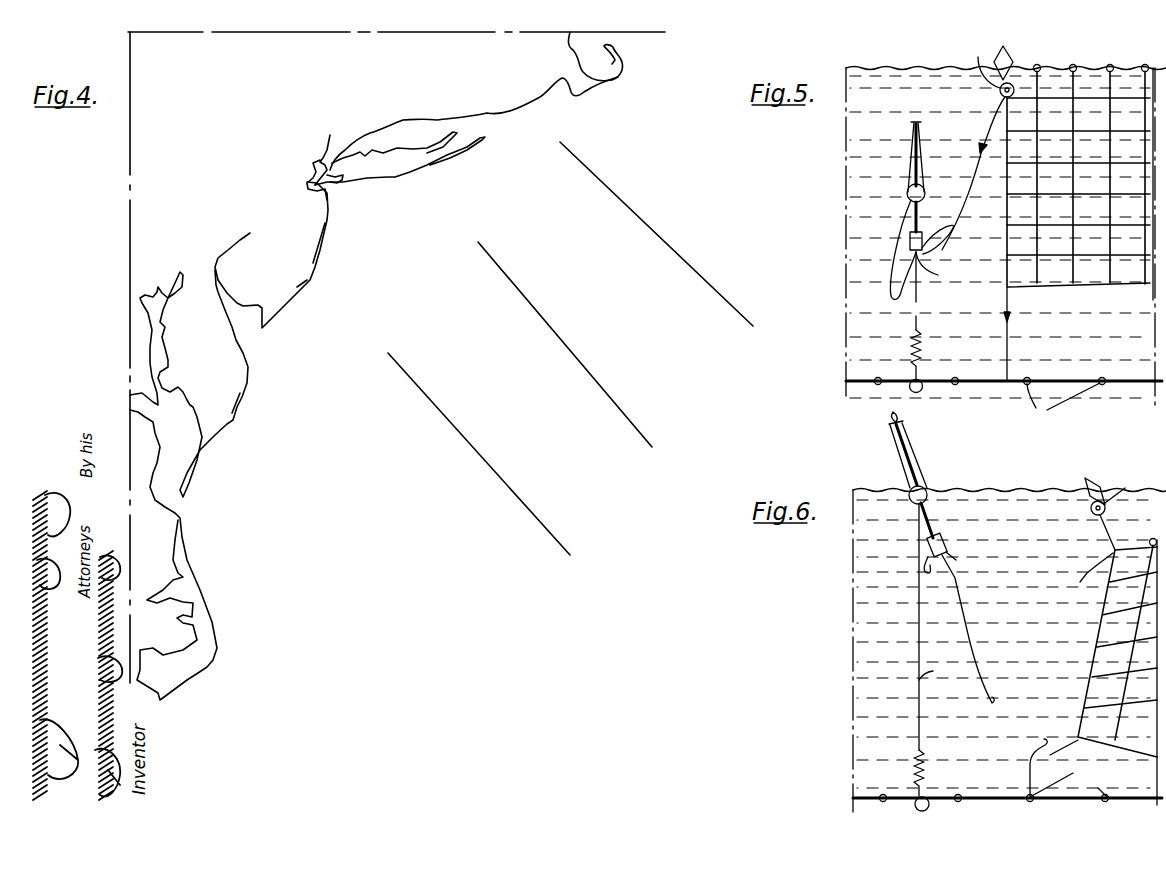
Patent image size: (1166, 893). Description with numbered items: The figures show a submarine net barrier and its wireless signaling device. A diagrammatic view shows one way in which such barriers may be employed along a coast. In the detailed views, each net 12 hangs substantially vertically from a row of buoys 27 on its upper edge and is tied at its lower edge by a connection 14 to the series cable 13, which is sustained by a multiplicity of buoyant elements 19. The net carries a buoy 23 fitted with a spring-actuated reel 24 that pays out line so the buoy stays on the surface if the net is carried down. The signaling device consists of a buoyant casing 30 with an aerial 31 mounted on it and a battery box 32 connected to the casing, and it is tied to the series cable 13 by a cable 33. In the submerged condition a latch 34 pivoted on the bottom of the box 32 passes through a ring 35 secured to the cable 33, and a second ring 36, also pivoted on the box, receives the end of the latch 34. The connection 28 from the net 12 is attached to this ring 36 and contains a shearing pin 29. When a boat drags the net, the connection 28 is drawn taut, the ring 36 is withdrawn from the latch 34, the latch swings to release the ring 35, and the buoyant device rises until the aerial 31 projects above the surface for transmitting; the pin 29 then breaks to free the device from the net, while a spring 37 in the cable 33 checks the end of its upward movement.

In FIG. 5, the net 12 is at (1005, 244).
In FIG. 6, the net 12 is at (1097, 630).
In FIG. 5, the series cable 13 is at (972, 379).
In FIG. 6, the series cable 13 is at (968, 796).
In FIG. 5, the connection 14 is at (1009, 335).
In FIG. 6, the connection 14 is at (1030, 777).
In FIG. 5, the buoyant elements 19 is at (1063, 405).
In FIG. 6, the buoyant elements 19 is at (1068, 782).
In FIG. 5, the buoy 23 is at (1010, 62).
In FIG. 6, the buoy 23 is at (1092, 481).
In FIG. 5, the spring-actuated reel 24 is at (979, 62).
In FIG. 6, the spring-actuated reel 24 is at (1126, 485).
In FIG. 5, the buoys 27 is at (1142, 66).
In FIG. 5, the connection 28 is at (976, 172).
In FIG. 6, the connection 28 is at (976, 632).
In FIG. 5, the shearing pin 29 is at (979, 147).
In FIG. 5, the buoyant casing 30 is at (907, 195).
In FIG. 6, the buoyant casing 30 is at (909, 495).
In FIG. 5, the aerial 31 is at (911, 133).
In FIG. 6, the aerial 31 is at (898, 453).
In FIG. 5, the battery box 32 is at (923, 233).
In FIG. 6, the battery box 32 is at (936, 534).
In FIG. 5, the cable 33 is at (898, 257).
In FIG. 6, the cable 33 is at (917, 706).
In FIG. 5, the latch 34 is at (901, 249).
In FIG. 6, the latch 34 is at (935, 575).
In FIG. 5, the ring 35 is at (938, 269).
In FIG. 6, the ring 35 is at (938, 670).
In FIG. 5, the second ring 36 is at (944, 244).
In FIG. 6, the second ring 36 is at (946, 552).
In FIG. 5, the spring 37 is at (911, 352).
In FIG. 6, the spring 37 is at (913, 755).